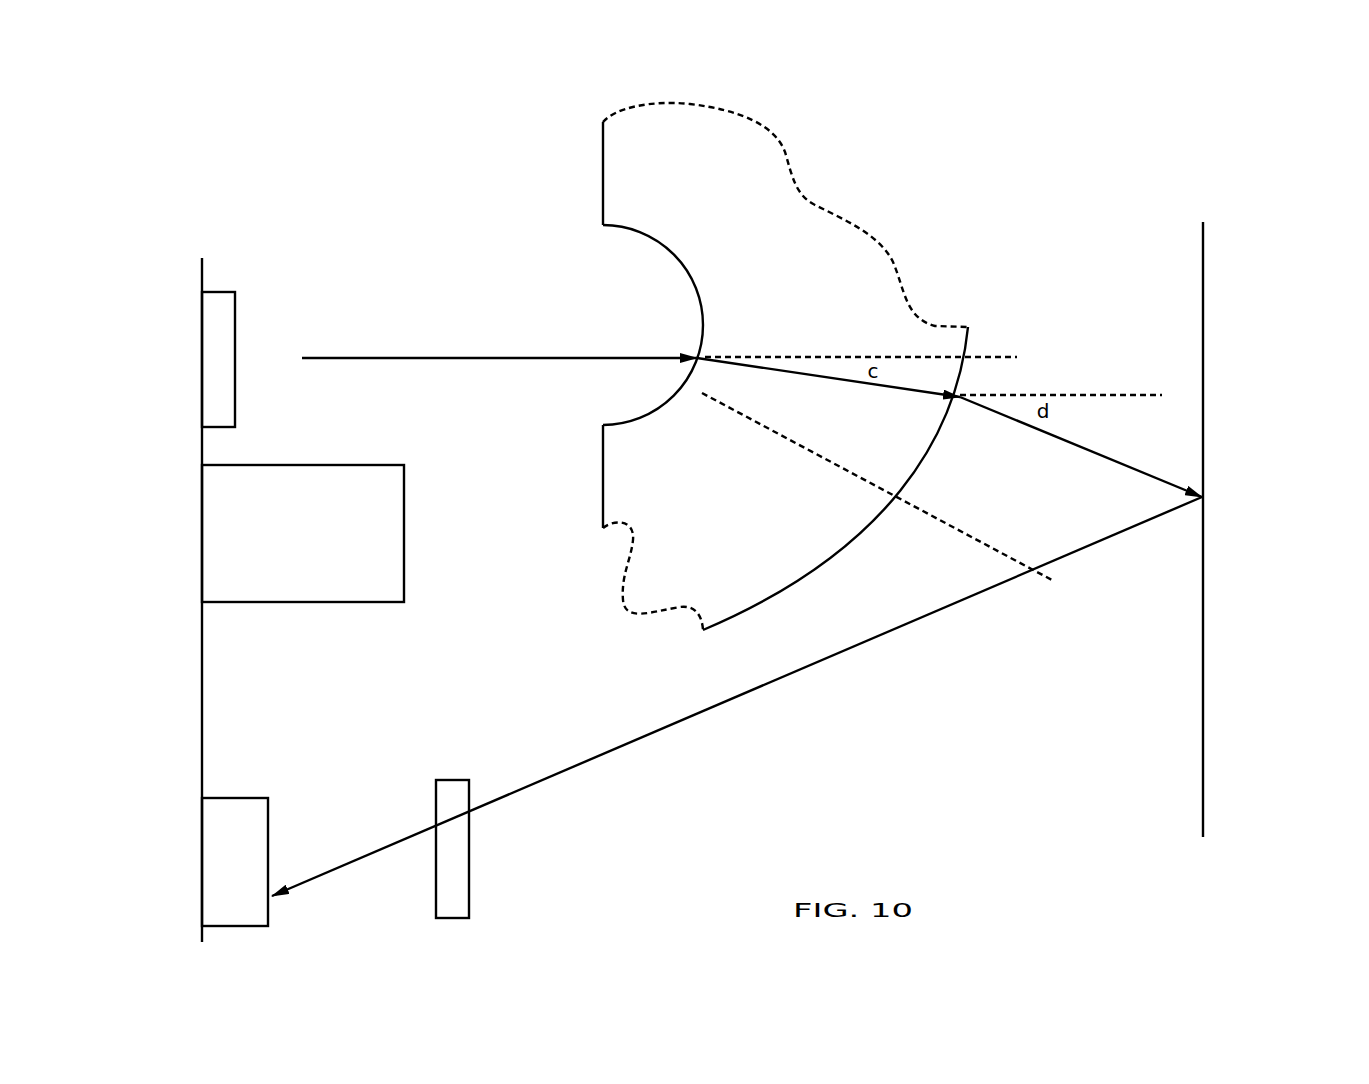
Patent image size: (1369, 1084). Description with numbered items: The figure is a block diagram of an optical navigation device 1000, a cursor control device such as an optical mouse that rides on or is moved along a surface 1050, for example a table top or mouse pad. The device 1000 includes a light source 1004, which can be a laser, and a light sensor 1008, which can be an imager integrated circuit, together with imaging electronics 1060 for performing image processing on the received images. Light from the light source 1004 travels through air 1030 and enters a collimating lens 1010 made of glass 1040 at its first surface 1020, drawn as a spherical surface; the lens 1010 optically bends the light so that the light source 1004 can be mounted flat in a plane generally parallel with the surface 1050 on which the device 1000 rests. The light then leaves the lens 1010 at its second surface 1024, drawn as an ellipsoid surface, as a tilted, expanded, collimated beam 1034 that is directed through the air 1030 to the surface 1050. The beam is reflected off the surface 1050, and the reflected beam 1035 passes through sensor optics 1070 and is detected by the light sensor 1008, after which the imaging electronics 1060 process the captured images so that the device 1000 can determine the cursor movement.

The optical navigation device 1000 is at (124, 226).
The light source 1004 is at (235, 325).
The light sensor 1008 is at (234, 816).
The collimating lens 1010 is at (800, 358).
The first surface 1020 is at (683, 273).
The second surface (e.g., ellipsoid surface) 1024 is at (1018, 358).
The second surface 1030 is at (953, 756).
The light ray exiting lens toward surface 1034 is at (1081, 447).
The reflected beam 1035 is at (737, 696).
The glass 1040 is at (702, 184).
The surface 1050 is at (1203, 767).
The imaging electronics 1060 is at (276, 578).
The sensor optics 1070 is at (455, 780).